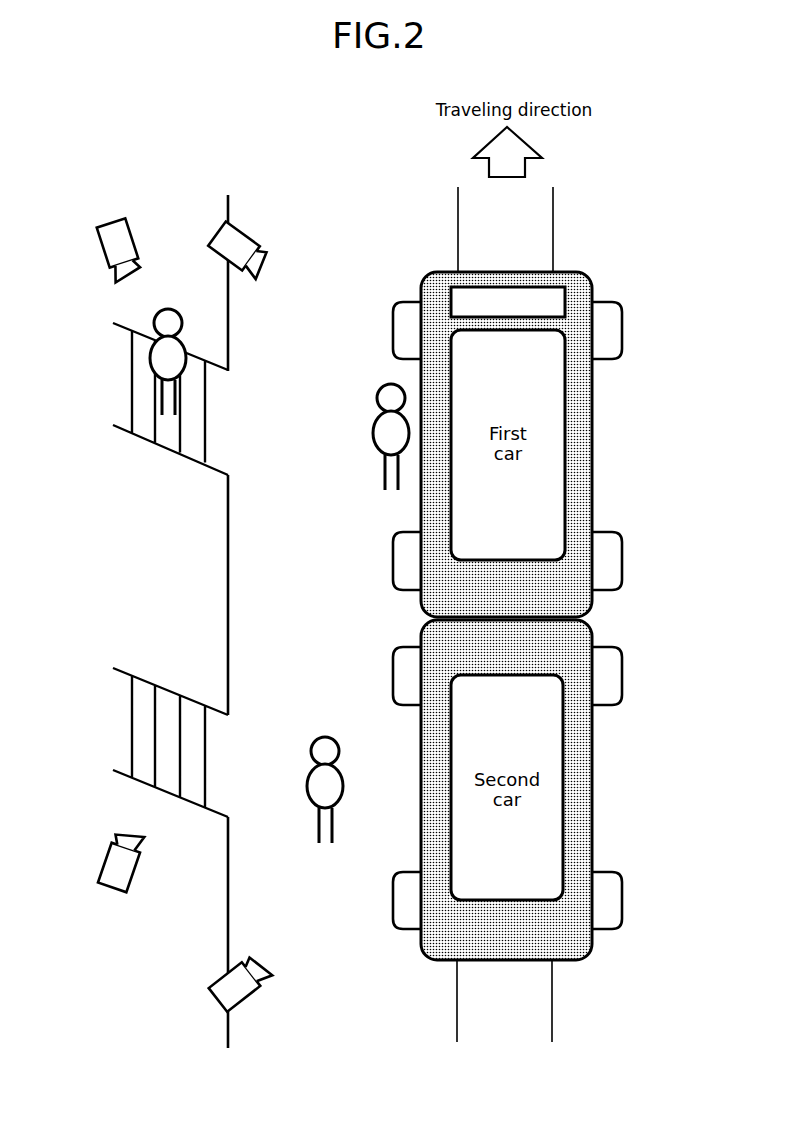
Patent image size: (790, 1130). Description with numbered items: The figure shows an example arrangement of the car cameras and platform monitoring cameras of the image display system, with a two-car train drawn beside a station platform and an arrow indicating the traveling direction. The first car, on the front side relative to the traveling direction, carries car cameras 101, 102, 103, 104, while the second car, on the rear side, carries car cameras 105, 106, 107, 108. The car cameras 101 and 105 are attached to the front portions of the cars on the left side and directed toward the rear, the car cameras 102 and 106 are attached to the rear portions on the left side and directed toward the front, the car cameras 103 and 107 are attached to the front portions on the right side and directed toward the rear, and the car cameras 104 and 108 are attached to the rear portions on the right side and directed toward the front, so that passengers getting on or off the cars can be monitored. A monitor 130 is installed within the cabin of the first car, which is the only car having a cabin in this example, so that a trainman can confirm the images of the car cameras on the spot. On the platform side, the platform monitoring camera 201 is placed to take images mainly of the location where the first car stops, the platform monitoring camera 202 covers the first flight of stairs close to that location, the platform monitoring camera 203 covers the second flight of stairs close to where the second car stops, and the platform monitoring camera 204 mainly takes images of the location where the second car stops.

The car camera 101 is at (393, 330).
The car camera 102 is at (393, 564).
The car camera 103 is at (622, 330).
The car camera 104 is at (622, 561).
The car camera 105 is at (393, 680).
The car camera 106 is at (393, 896).
The car camera 107 is at (622, 672).
The car camera 108 is at (622, 896).
The monitor 130 is at (561, 287).
The platform monitoring camera 201 is at (218, 230).
The platform monitoring camera 202 is at (110, 222).
The platform monitoring camera 203 is at (110, 892).
The platform monitoring camera 204 is at (217, 998).